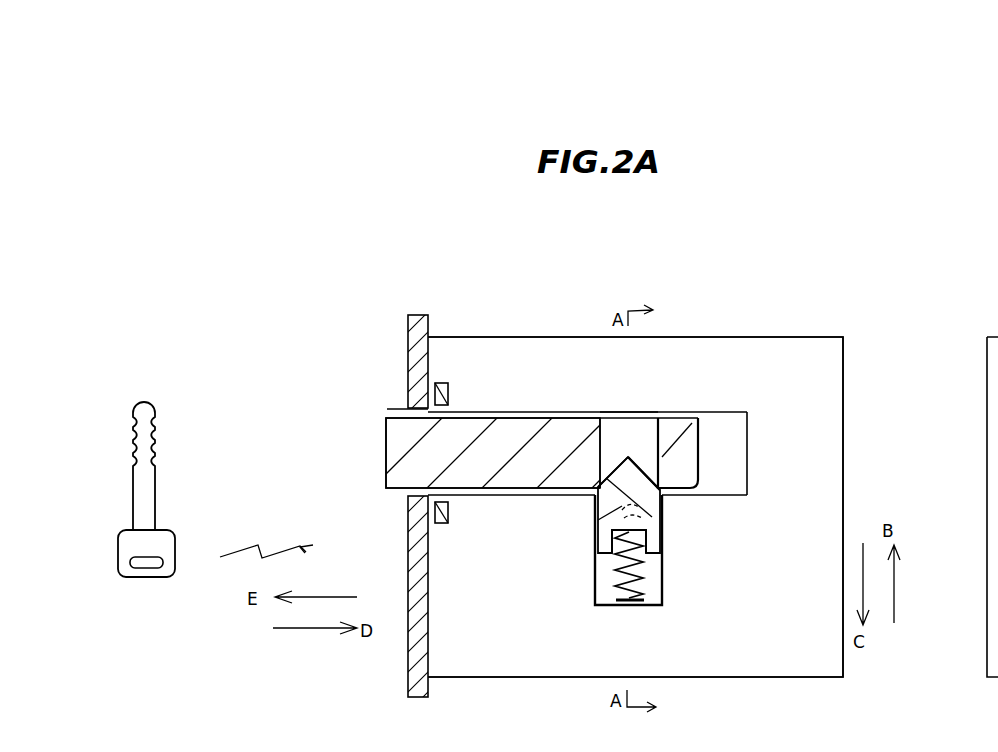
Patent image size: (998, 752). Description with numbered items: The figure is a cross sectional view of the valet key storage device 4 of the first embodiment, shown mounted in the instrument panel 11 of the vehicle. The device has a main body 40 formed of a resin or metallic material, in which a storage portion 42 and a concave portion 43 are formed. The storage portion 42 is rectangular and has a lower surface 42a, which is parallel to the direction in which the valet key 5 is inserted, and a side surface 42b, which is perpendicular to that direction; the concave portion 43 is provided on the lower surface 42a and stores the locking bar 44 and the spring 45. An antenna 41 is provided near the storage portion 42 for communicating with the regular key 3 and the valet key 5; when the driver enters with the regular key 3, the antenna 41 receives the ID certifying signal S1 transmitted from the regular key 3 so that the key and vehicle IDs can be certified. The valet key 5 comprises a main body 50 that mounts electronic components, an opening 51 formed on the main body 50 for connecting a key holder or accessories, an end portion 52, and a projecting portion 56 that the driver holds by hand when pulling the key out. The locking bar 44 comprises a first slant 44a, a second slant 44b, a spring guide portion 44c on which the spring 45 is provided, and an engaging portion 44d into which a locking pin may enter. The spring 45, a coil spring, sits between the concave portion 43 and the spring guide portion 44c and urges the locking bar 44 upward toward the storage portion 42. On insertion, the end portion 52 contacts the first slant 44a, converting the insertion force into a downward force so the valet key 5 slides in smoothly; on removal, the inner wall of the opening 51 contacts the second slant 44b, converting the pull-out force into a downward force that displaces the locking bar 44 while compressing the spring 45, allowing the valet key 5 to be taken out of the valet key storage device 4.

The regular key 3 is at (124, 577).
The valet key storage device 4 is at (732, 324).
The valet key 5 is at (386, 456).
The instrument panel 11 is at (408, 338).
The main body 40 is at (843, 413).
The antenna 41 is at (441, 383).
The storage portion 42 is at (472, 410).
The lower surface 42a is at (747, 498).
The side surface 42b is at (747, 447).
The concave portion 43 is at (662, 590).
The locking bar 44 is at (600, 513).
The first slant 44a is at (656, 458).
The second slant 44b is at (664, 450).
The spring guide portion 44c is at (612, 548).
The engaging portion 44d is at (662, 518).
The spring 45 is at (662, 559).
The main body 50 is at (395, 483).
The opening 51 is at (614, 445).
The end portion 52 is at (697, 419).
The projecting portion 56 is at (396, 409).
The ID certifying signal S1 is at (279, 528).